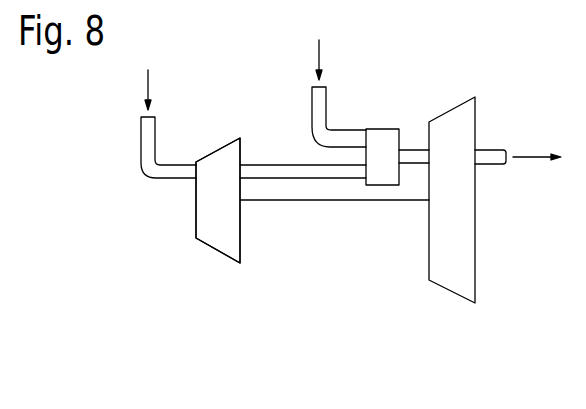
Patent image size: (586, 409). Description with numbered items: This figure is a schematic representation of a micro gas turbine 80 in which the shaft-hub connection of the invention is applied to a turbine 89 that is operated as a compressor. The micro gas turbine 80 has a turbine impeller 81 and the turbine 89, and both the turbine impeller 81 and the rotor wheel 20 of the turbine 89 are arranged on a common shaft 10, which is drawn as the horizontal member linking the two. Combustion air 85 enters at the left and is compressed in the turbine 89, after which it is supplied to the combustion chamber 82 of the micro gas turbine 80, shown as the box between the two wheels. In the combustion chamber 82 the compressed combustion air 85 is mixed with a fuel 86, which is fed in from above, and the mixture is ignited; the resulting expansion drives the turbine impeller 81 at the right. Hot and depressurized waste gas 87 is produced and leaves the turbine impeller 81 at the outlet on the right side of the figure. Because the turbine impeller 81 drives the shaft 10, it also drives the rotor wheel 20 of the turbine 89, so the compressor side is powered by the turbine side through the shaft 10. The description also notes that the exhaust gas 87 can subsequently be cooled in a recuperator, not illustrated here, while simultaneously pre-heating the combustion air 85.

The micro gas turbine 80 is at (295, 307).
The rotor wheel 20 is at (213, 247).
The turbine 89 is at (213, 247).
The shaft 10 is at (336, 201).
The combustion air 85 is at (147, 85).
The fuel 86 is at (318, 57).
The combustion chamber 82 is at (380, 128).
The turbine impeller 81 is at (443, 287).
The waste gas 87 is at (527, 155).